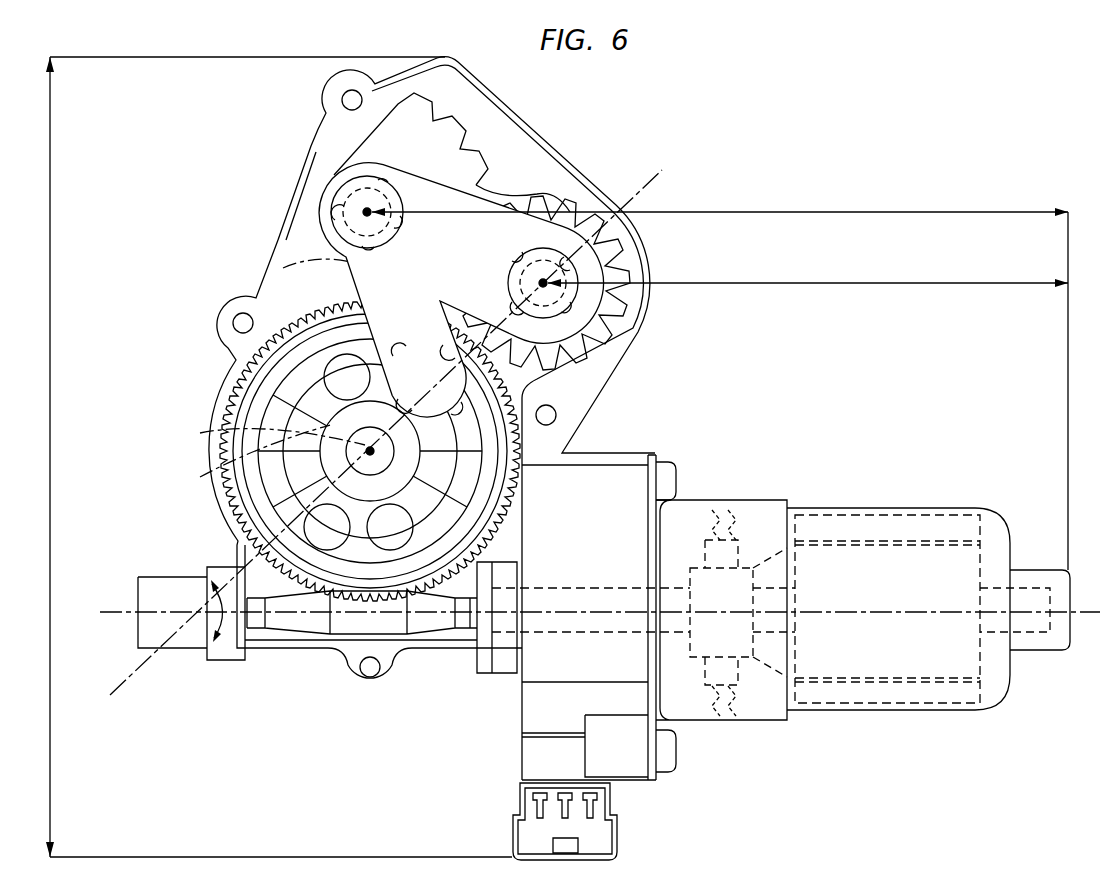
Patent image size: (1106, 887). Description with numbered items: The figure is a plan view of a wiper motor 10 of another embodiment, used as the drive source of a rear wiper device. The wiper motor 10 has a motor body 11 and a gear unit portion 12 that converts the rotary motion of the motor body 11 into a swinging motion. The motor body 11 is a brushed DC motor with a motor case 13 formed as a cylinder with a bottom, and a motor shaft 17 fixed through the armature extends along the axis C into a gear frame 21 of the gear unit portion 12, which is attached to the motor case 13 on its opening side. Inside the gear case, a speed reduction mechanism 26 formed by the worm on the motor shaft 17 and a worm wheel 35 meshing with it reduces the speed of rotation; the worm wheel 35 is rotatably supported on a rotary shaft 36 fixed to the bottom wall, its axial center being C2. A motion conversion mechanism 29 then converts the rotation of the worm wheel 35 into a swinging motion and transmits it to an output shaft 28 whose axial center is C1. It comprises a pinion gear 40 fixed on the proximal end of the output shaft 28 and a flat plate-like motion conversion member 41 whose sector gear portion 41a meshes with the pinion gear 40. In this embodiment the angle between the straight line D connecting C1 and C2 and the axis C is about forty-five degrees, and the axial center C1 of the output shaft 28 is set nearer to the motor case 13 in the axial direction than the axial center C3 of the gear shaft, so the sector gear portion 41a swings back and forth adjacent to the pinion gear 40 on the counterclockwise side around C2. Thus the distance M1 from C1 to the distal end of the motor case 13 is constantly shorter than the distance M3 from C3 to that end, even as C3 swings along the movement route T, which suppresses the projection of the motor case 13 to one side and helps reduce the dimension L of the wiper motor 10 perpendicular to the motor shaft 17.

The wiper motor 10 is at (657, 152).
The motor body 11 is at (886, 724).
The gear unit portion 12 is at (240, 222).
The motor case 13 is at (990, 690).
The motor shaft 17 is at (558, 612).
The gear frame 21 is at (277, 665).
The speed reduction mechanism 26 is at (266, 573).
The output shaft 28 is at (642, 313).
The motion conversion mechanism 29 is at (508, 166).
The worm wheel 35 is at (216, 398).
The rotary shaft 36 is at (322, 455).
The pinion gear 40 is at (618, 272).
The motion conversion member 41 is at (337, 153).
The sector gear portion 41a is at (435, 158).
The axis of the motor shaft C is at (1085, 608).
The axial center of the output shaft C1 is at (575, 326).
The axial center of the worm wheel C2 is at (366, 450).
The axial center of the gear shaft C3 is at (364, 211).
The straight line D is at (132, 660).
The movement route T is at (283, 268).
The dimension of the wiper motor L is at (272, 457).
The distance M1 is at (808, 272).
The distance M3 is at (720, 377).